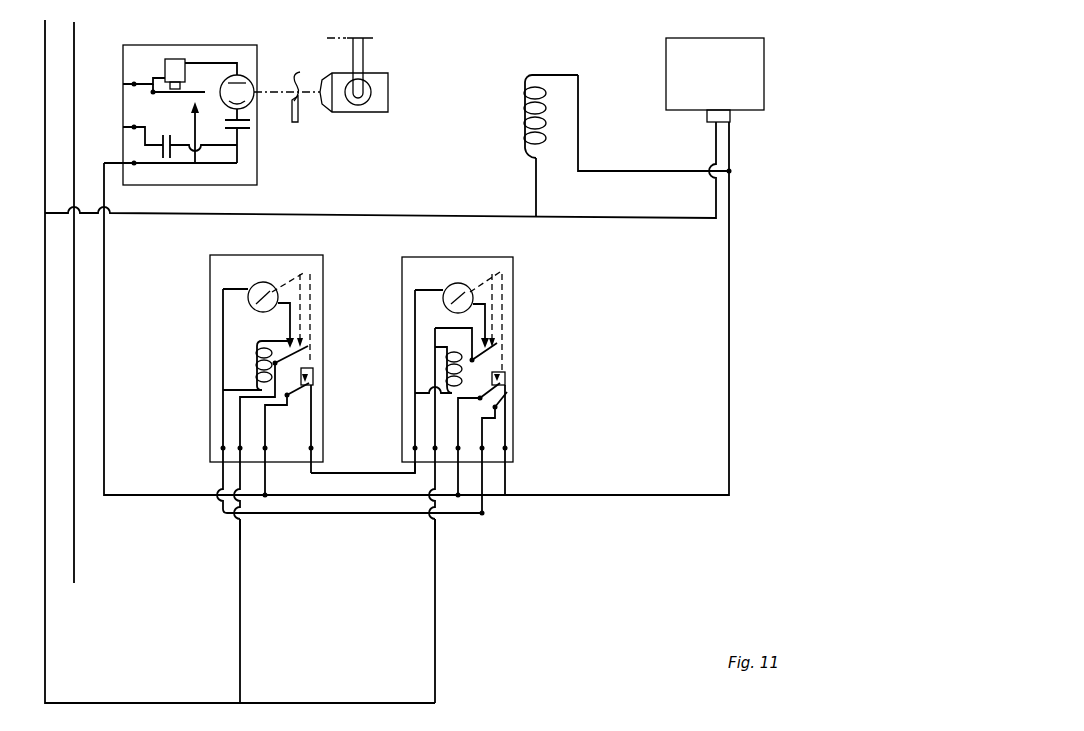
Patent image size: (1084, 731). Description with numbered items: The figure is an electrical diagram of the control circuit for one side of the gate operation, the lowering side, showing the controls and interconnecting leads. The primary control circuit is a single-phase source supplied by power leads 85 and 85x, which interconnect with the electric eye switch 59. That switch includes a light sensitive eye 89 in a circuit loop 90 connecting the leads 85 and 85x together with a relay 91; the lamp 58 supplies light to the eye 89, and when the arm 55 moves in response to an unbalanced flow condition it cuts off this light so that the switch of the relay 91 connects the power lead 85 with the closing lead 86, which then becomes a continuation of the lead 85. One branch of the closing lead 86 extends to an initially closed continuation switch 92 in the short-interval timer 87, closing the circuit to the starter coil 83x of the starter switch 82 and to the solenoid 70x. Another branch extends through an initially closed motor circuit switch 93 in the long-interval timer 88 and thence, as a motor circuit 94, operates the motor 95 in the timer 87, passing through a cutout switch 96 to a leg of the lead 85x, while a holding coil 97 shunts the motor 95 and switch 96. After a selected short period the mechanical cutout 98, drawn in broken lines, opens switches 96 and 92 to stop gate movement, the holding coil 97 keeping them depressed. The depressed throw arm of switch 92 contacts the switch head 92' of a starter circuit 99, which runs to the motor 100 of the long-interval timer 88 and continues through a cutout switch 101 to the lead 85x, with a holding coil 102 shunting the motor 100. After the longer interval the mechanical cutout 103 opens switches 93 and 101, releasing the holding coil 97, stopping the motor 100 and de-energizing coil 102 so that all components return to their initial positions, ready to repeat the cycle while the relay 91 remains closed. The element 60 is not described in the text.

The power lead 85 is at (74, 48).
The power lead 85x is at (45, 115).
The closing lead 86 is at (186, 166).
The electric eye switch 59 is at (248, 45).
The relay 91 is at (175, 59).
The circuit loop 90 is at (197, 62).
The light sensitive eye 89 is at (251, 97).
The lever 60 is at (288, 82).
The arm 55 is at (298, 108).
The lamp 58 is at (386, 101).
The solenoid 70x is at (531, 117).
The starter switch 82 is at (715, 74).
The starter coil 83x is at (728, 116).
The long-interval timer 88 is at (323, 266).
The motor 100 is at (268, 285).
The mechanical cutout 103 is at (318, 300).
The holding coil 102 is at (257, 348).
The cutout switch 101 is at (308, 350).
The motor circuit switch 93 is at (312, 395).
The motor circuit 94 is at (371, 471).
The starter circuit 99 is at (361, 514).
The short-interval timer 87 is at (513, 270).
The motor 95 is at (457, 283).
The mechanical cutout 98 is at (505, 298).
The holding coil 97 is at (445, 363).
The cutout switch 96 is at (498, 355).
The continuation switch 92 is at (501, 433).
The switch head 92' is at (515, 452).